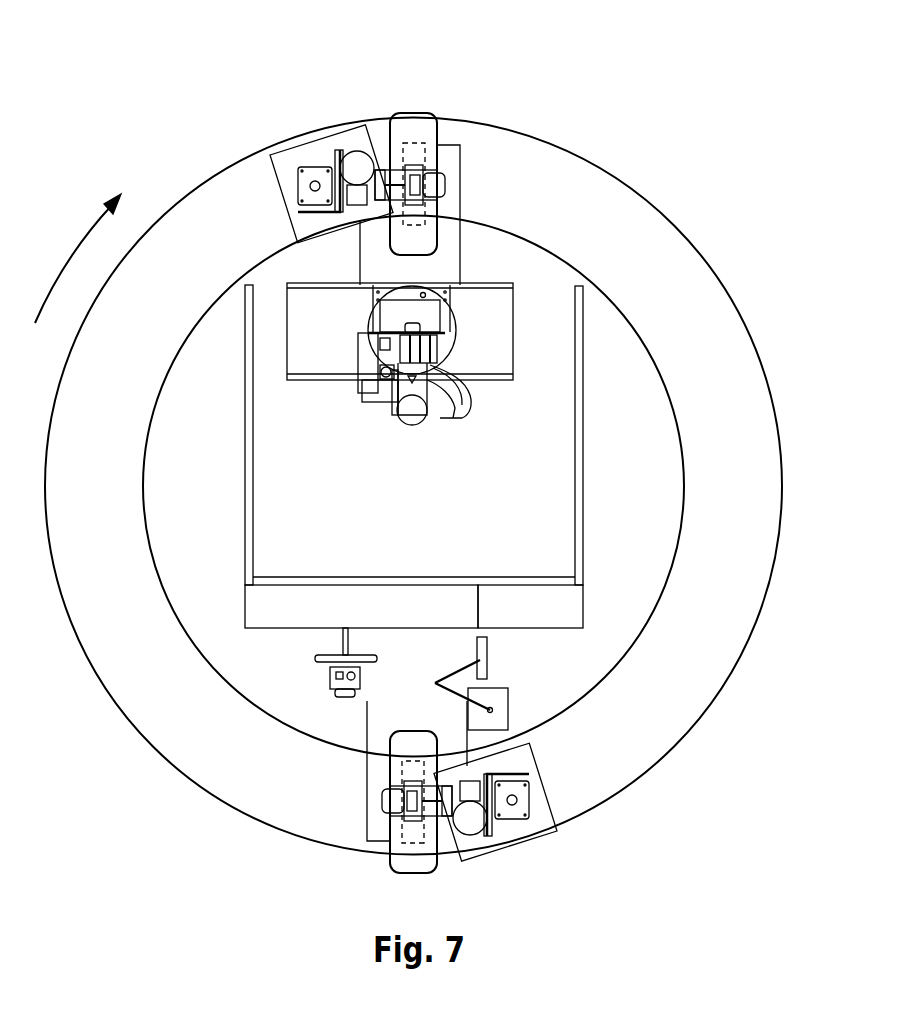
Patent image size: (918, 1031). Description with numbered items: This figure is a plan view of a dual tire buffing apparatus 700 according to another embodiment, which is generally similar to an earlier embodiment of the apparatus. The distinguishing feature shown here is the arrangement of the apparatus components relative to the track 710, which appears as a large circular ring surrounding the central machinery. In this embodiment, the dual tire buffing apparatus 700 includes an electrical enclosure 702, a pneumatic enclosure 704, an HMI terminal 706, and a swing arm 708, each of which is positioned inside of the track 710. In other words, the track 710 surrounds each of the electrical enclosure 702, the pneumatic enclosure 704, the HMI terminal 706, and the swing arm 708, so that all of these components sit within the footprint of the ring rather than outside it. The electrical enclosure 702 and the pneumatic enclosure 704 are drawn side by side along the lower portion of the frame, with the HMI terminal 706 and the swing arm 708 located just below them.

The dual tire buffing apparatus 700 is at (174, 54).
The electrical enclosure 702 is at (287, 614).
The pneumatic enclosure 704 is at (551, 611).
The HMI terminal 706 is at (322, 662).
The swing arm 708 is at (448, 700).
The track 710 is at (718, 305).